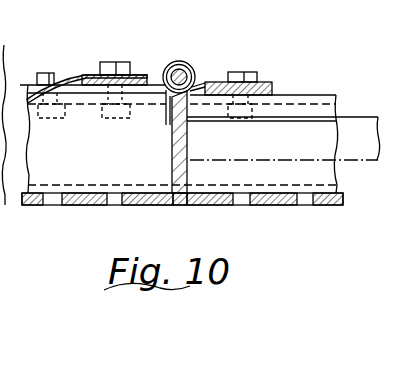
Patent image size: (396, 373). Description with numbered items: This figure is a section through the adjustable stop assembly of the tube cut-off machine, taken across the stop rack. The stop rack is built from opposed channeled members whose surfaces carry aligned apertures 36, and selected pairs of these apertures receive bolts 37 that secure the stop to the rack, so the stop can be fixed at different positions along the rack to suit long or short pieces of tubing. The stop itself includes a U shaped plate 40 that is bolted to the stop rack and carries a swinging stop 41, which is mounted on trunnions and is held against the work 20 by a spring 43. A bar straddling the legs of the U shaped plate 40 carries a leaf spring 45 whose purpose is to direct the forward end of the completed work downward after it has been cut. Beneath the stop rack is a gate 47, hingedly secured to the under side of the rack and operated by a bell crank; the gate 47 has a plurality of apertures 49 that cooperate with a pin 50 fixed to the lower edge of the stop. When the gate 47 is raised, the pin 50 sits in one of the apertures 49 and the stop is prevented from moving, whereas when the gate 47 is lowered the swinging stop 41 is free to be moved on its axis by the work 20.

The work 20 is at (360, 127).
The aligned apertures 36 is at (12, 103).
The bolts 37 is at (114, 71).
The U shaped plate 40 is at (273, 92).
The swinging stop 41 is at (189, 138).
The spring 43 is at (182, 62).
The leaf spring 45 is at (82, 74).
The gate 47 is at (213, 205).
The apertures 49 is at (169, 204).
The pin 50 is at (190, 193).